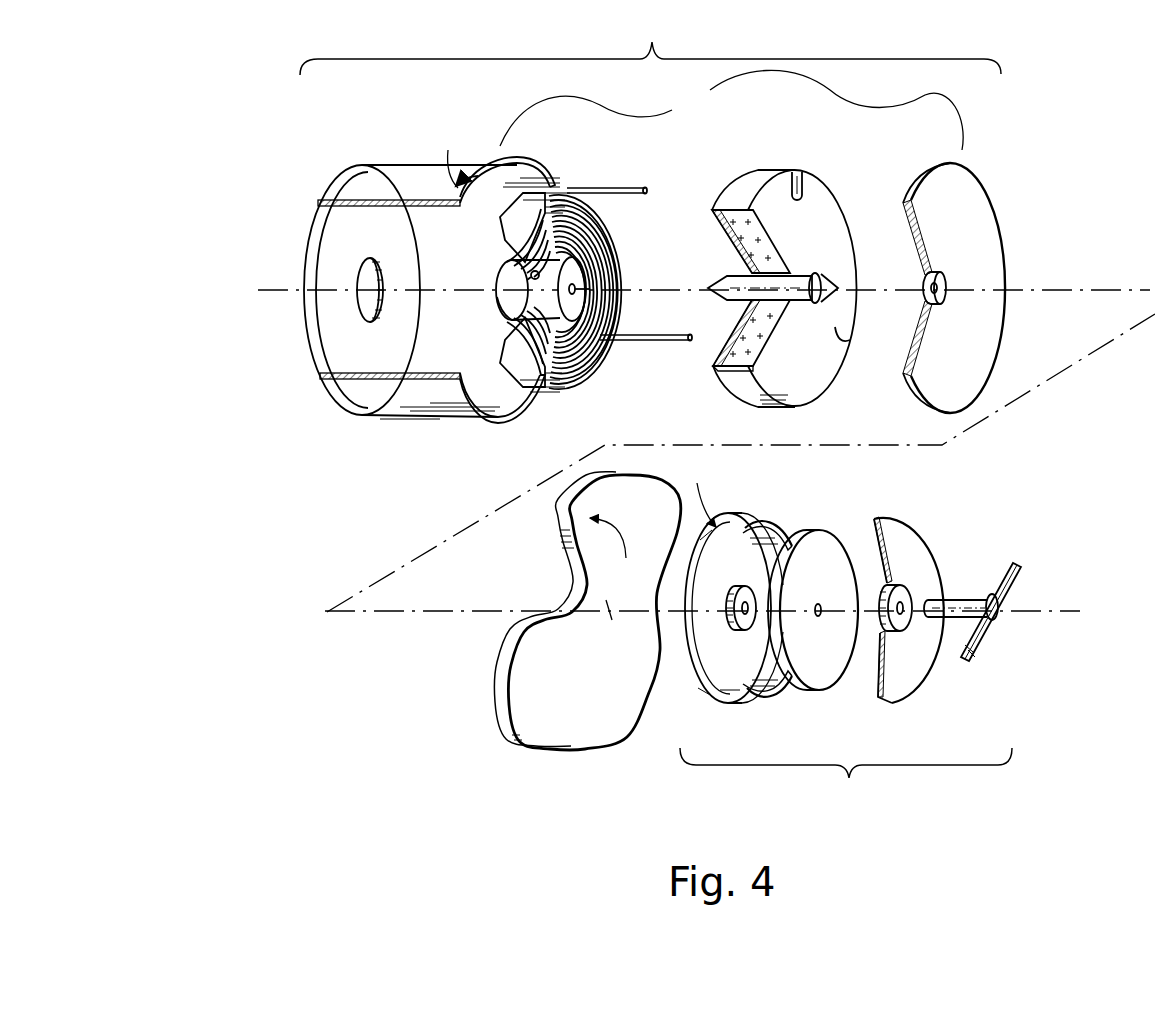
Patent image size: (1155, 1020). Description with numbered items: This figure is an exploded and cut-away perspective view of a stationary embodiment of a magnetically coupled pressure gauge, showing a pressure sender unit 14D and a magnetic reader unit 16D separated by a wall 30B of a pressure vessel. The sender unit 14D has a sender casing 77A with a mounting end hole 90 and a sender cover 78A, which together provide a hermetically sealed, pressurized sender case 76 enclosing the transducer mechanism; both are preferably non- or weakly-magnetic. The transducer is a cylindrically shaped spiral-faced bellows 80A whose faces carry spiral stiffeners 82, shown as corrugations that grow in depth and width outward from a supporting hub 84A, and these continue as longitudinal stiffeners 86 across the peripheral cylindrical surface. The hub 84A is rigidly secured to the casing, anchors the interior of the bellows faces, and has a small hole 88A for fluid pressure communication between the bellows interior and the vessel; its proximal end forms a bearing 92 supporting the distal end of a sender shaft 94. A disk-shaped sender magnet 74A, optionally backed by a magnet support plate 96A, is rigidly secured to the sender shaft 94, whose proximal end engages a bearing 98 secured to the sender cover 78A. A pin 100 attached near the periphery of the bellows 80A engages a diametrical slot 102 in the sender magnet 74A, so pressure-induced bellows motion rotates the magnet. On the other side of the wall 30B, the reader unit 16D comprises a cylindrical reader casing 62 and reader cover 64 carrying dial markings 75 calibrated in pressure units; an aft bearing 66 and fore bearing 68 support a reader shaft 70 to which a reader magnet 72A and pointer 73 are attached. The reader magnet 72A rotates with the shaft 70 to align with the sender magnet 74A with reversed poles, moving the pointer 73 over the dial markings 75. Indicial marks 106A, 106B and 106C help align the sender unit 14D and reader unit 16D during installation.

The pressure sender unit 14D is at (650, 40).
The magnetic reader unit 16D is at (846, 784).
The sender case 76 is at (731, 110).
The sender casing 77A is at (397, 418).
The mounting end hole 90 is at (358, 297).
The indicial mark 106C is at (455, 153).
The longitudinal stiffeners 86 is at (553, 186).
The hole 88A is at (531, 277).
The hub 84A is at (497, 297).
The spiral stiffeners 82 is at (618, 262).
The spiral-faced bellows 80A is at (607, 378).
The pin 100 is at (647, 187).
The bearing 92 is at (624, 284).
The sender shaft 94 is at (735, 272).
The sender magnet 74A is at (840, 182).
The diametrical slot 102 is at (797, 172).
The magnet support plate 96A is at (718, 368).
The sender cover 78A is at (1000, 235).
The bearing 98 is at (928, 286).
The pressure vessel wall 30B is at (492, 718).
The indicial mark 106B is at (621, 553).
The reader casing 62 is at (747, 520).
The indicial mark 106A is at (722, 492).
The aft bearing 66 is at (757, 625).
The reader magnet 72A is at (838, 680).
The reader cover 64 is at (925, 537).
The dial markings 75 is at (897, 530).
The fore bearing 68 is at (907, 630).
The reader shaft 70 is at (955, 600).
The pointer 73 is at (983, 640).